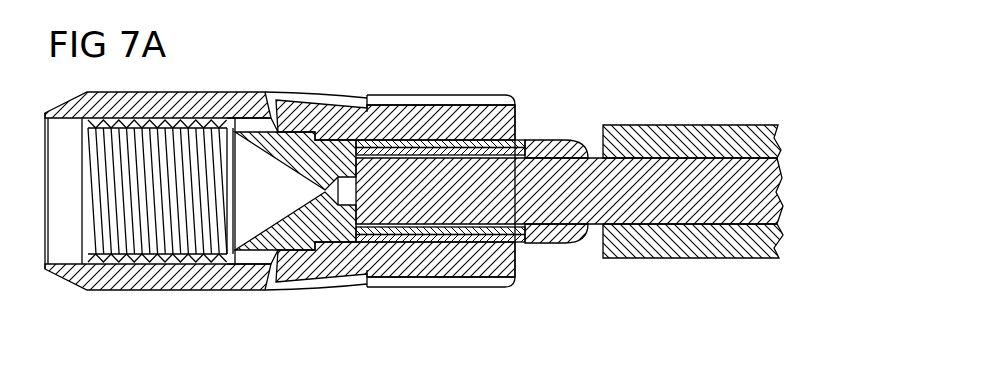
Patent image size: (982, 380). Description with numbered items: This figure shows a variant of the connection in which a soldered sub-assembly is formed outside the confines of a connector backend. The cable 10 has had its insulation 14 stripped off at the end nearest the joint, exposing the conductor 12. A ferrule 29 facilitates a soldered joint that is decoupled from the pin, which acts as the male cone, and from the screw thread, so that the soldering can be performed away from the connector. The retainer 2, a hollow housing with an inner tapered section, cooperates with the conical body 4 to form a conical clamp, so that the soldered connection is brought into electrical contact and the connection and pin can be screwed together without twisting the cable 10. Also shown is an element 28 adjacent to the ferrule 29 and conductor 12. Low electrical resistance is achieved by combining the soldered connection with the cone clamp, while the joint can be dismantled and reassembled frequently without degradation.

The cable 10 is at (690, 101).
The retainer 2 is at (172, 277).
The conical body 4 is at (270, 177).
The ferrule 29 is at (327, 232).
The sealing ring 28 is at (558, 232).
The conductor 12 is at (770, 190).
The insulation 14 is at (678, 243).